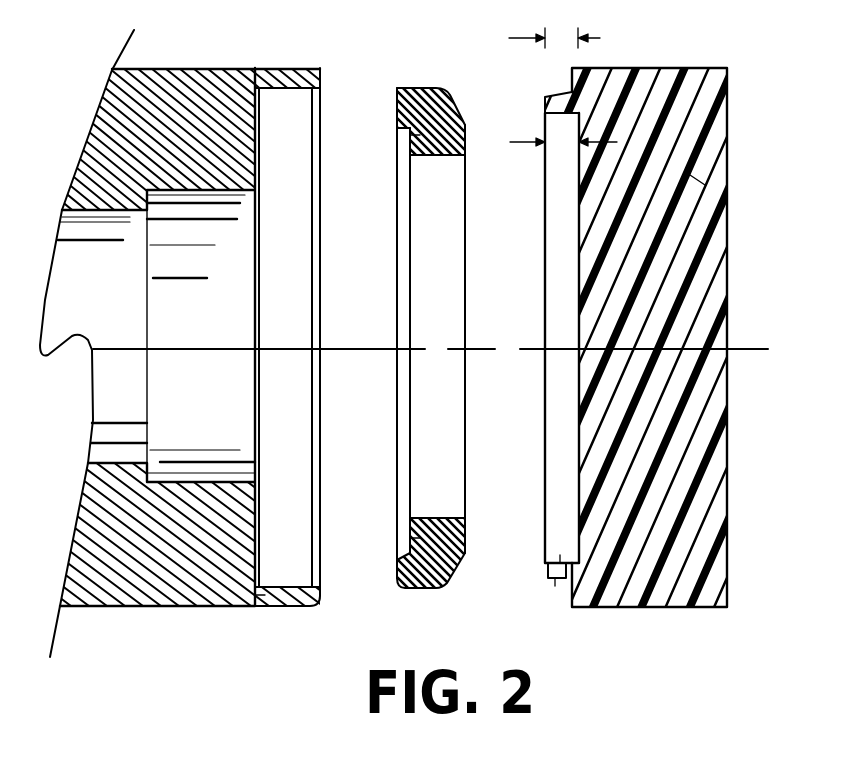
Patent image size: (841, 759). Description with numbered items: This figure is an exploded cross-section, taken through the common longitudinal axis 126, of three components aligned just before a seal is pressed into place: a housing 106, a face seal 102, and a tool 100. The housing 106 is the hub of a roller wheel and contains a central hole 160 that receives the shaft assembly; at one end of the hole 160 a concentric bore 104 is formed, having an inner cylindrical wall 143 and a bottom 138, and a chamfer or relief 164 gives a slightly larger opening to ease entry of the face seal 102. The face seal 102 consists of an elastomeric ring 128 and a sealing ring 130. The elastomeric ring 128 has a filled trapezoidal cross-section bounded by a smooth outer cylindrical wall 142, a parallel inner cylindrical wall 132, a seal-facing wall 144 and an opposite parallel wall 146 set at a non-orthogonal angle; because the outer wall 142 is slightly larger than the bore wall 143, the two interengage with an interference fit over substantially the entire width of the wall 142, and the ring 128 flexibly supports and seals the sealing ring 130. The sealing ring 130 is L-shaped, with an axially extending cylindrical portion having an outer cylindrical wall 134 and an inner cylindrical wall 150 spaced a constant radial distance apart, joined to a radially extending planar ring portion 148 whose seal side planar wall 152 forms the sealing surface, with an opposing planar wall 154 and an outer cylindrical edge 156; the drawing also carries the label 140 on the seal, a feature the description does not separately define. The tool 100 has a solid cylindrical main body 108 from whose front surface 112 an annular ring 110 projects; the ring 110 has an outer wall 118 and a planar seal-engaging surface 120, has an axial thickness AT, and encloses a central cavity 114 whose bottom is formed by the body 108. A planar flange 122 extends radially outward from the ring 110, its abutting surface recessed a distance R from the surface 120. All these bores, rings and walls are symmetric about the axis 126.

The tool 100 is at (653, 68).
The face seal 102 is at (487, 37).
The bore 104 is at (285, 112).
The housing 106 is at (300, 68).
The main body 108 is at (698, 180).
The ring 110 is at (544, 390).
The front surface 112 is at (568, 597).
The central cavity 114 is at (552, 287).
The outer wall 118 is at (560, 560).
The seal-engaging surface 120 is at (548, 570).
The flange 122 is at (572, 90).
The longitudinal axis 126 is at (107, 347).
The elastomeric ring 128 is at (395, 292).
The sealing ring 130 is at (436, 459).
The inner cylindrical wall 132 is at (423, 515).
The outer cylindrical wall 134 is at (417, 540).
The bottom 138 is at (257, 145).
The seal outer face 140 is at (468, 267).
The outer cylindrical wall 142 is at (400, 592).
The inner cylindrical wall 143 is at (258, 590).
The seal-facing wall 144 is at (445, 560).
The opposite wall 146 is at (444, 515).
The ring portion 148 is at (466, 520).
The inner cylindrical wall 150 is at (436, 235).
The seal side planar wall 152 is at (467, 143).
The opposing planar wall 154 is at (412, 135).
The outer cylindrical edge 156 is at (462, 125).
The hole 160 is at (165, 371).
The chamfer 164 is at (320, 414).